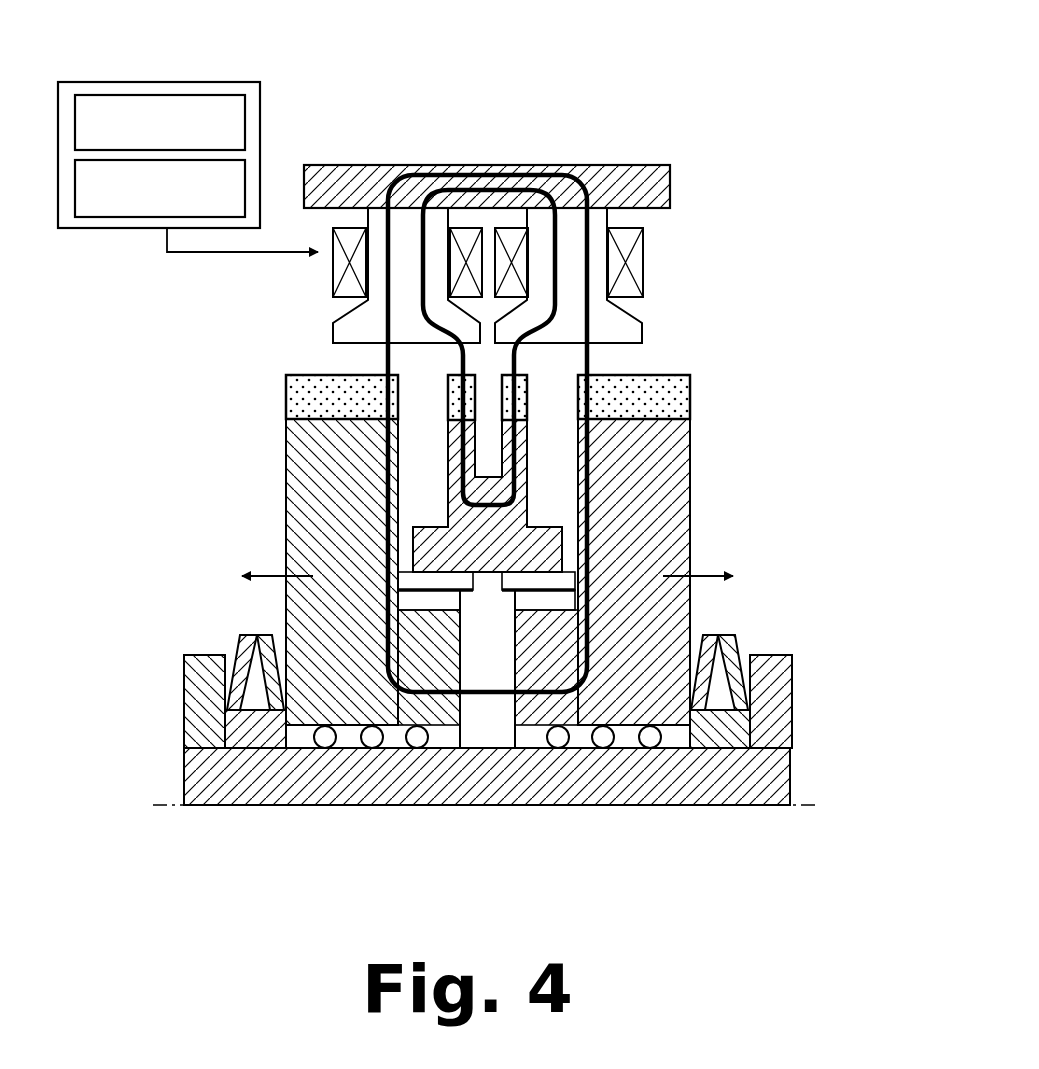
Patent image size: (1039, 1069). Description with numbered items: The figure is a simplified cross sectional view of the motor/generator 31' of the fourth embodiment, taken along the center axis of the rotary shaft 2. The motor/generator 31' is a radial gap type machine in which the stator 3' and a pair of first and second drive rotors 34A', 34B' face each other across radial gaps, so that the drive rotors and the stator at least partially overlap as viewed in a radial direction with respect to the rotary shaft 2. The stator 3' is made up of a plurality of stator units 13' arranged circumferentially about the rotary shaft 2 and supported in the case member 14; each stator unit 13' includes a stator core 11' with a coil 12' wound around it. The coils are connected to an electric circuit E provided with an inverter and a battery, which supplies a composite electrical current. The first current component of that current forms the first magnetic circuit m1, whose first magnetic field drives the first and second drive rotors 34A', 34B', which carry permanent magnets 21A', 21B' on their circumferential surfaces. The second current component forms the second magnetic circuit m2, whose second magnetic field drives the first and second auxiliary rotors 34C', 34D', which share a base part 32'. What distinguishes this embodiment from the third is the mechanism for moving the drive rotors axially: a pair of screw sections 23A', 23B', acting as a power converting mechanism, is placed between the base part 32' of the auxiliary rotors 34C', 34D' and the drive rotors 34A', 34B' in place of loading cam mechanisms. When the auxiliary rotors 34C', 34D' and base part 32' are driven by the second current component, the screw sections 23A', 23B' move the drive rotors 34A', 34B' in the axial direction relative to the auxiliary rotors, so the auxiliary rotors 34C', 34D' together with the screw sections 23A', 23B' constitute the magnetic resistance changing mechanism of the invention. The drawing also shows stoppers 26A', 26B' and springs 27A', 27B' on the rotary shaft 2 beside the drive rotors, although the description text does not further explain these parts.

The rotary shaft 2 is at (718, 788).
The stator 3' is at (487, 197).
The stator core 11' is at (547, 231).
The coil 12' is at (606, 260).
The stator unit 13' is at (585, 227).
The case member 14 is at (333, 175).
The permanent magnet 21A' is at (284, 369).
The permanent magnet 21B' is at (708, 366).
The screw section 23A' is at (310, 620).
The screw section 23B' is at (670, 616).
The left stopper 26A' is at (175, 701).
The right stopper 26B' is at (787, 701).
The left spring 27A' is at (221, 643).
The right spring 27B' is at (758, 637).
The motor/generator 31' is at (757, 58).
The base part 32' is at (520, 645).
The first drive rotor 34A' is at (275, 522).
The second drive rotor 34B' is at (708, 519).
The first auxiliary rotor 34C' is at (357, 473).
The second auxiliary rotor 34D' is at (672, 433).
The first magnetic circuit m1 is at (425, 176).
The second magnetic circuit m2 is at (480, 190).
The electric circuit E is at (260, 127).